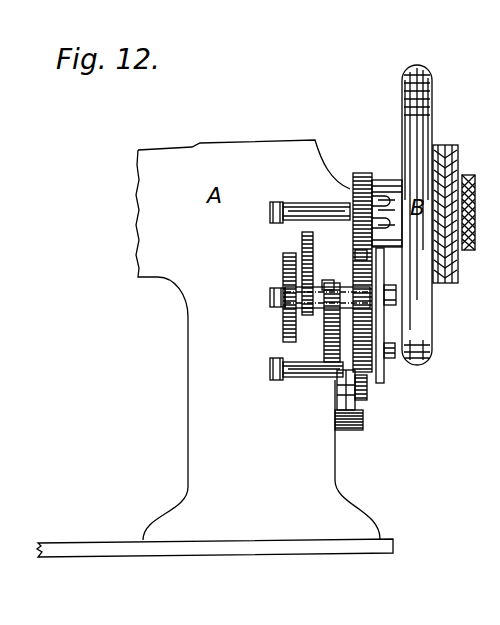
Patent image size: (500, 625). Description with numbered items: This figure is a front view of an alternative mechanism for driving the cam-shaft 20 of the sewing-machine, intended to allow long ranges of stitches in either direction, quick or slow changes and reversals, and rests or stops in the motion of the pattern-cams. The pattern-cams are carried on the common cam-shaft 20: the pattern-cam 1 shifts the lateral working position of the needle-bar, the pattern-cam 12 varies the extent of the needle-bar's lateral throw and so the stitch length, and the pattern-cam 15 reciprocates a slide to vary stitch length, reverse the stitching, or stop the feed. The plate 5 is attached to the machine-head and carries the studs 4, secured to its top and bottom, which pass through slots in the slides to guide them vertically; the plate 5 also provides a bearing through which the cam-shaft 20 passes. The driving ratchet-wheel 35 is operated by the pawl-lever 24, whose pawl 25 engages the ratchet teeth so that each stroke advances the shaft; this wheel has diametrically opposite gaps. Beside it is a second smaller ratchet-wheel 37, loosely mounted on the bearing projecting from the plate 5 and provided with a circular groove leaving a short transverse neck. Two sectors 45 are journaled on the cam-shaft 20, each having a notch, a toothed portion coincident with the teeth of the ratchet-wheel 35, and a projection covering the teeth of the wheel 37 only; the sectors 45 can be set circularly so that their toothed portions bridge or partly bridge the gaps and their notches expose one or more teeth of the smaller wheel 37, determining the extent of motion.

The pattern-cam 1 is at (301, 241).
The studs 4 is at (315, 204).
The plate 5 is at (357, 414).
The pattern-cam 12 is at (279, 297).
The pattern-cam 15 is at (324, 337).
The cam-shaft 20 is at (270, 298).
The pawl-lever 24 is at (386, 379).
The pawl 25 is at (327, 282).
The driving ratchet-wheel 35 is at (373, 381).
The second smaller ratchet-wheel 37 is at (357, 350).
The sectors 45 is at (372, 336).